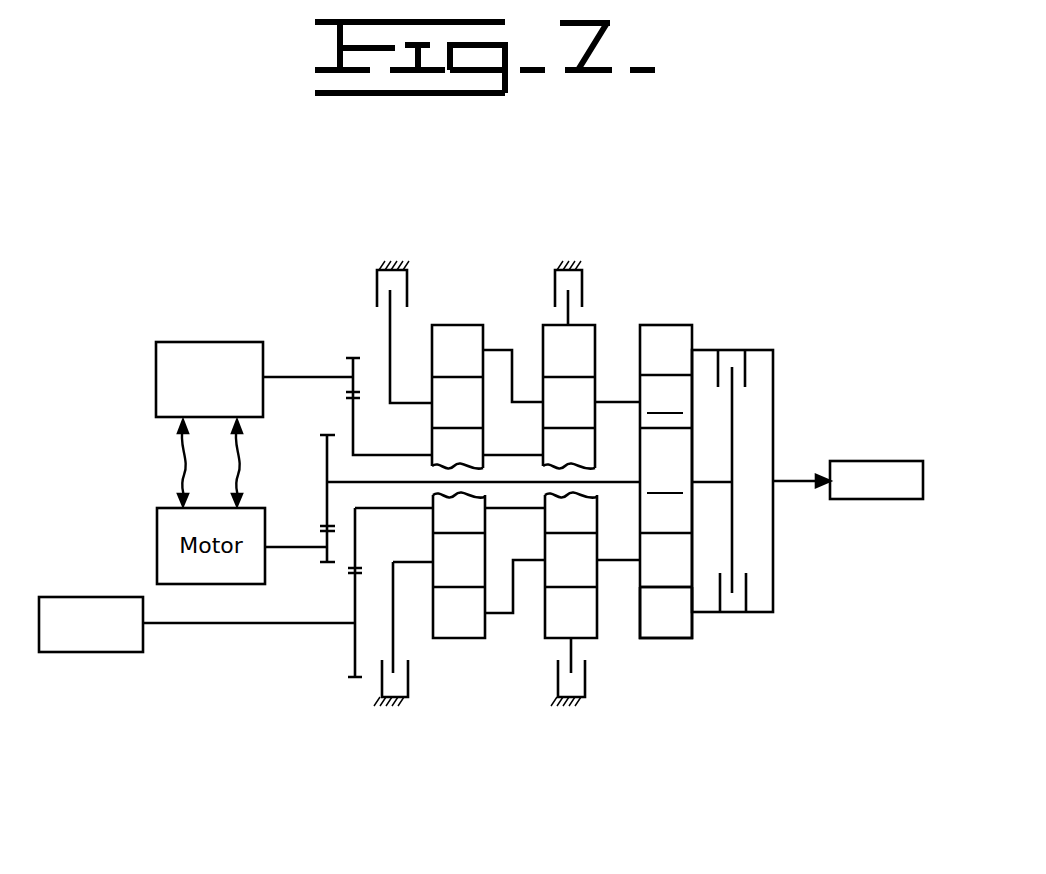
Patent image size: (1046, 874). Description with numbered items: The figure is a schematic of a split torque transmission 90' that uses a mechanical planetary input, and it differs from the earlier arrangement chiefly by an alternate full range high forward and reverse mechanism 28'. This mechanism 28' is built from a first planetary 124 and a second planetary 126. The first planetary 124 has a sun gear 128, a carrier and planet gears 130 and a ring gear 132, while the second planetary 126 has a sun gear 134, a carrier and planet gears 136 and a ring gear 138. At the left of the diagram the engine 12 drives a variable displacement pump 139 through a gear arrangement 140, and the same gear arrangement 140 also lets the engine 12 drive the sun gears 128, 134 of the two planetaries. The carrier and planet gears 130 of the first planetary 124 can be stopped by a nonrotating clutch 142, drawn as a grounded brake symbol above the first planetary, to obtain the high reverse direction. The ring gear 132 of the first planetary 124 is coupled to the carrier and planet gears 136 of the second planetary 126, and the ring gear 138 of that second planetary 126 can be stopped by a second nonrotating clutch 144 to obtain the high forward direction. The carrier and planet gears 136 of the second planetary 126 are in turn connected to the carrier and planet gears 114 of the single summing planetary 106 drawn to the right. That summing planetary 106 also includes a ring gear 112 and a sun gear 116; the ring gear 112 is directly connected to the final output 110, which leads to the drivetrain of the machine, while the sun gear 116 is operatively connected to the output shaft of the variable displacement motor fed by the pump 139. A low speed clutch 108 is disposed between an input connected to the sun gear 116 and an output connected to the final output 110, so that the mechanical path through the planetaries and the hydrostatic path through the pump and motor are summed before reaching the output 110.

The engine 12 is at (110, 597).
The variable displacement pump 139 is at (206, 342).
The gear arrangement 140 is at (331, 350).
The nonrotating clutch 142 is at (392, 262).
The first planetary 124 is at (513, 329).
The ring gear 132 is at (478, 325).
The carrier and planet gears 130 is at (437, 413).
The carrier and planet gears 136 is at (558, 413).
The ring gear 138 is at (597, 340).
The second planetary 126 is at (596, 303).
The nonrotating clutch 144 is at (568, 262).
The ring gear 112 is at (691, 455).
The carrier and planet gears 114 is at (665, 400).
The sun gear 116 is at (665, 480).
The summing planetary 106 is at (672, 644).
The low speed clutch 108 is at (740, 350).
The final output 110 is at (797, 481).
The sun gear 128 is at (440, 514).
The sun gear 134 is at (566, 512).
The split torque transmission 90' is at (537, 303).
The full range high forward and reverse mechanism 28' is at (459, 637).